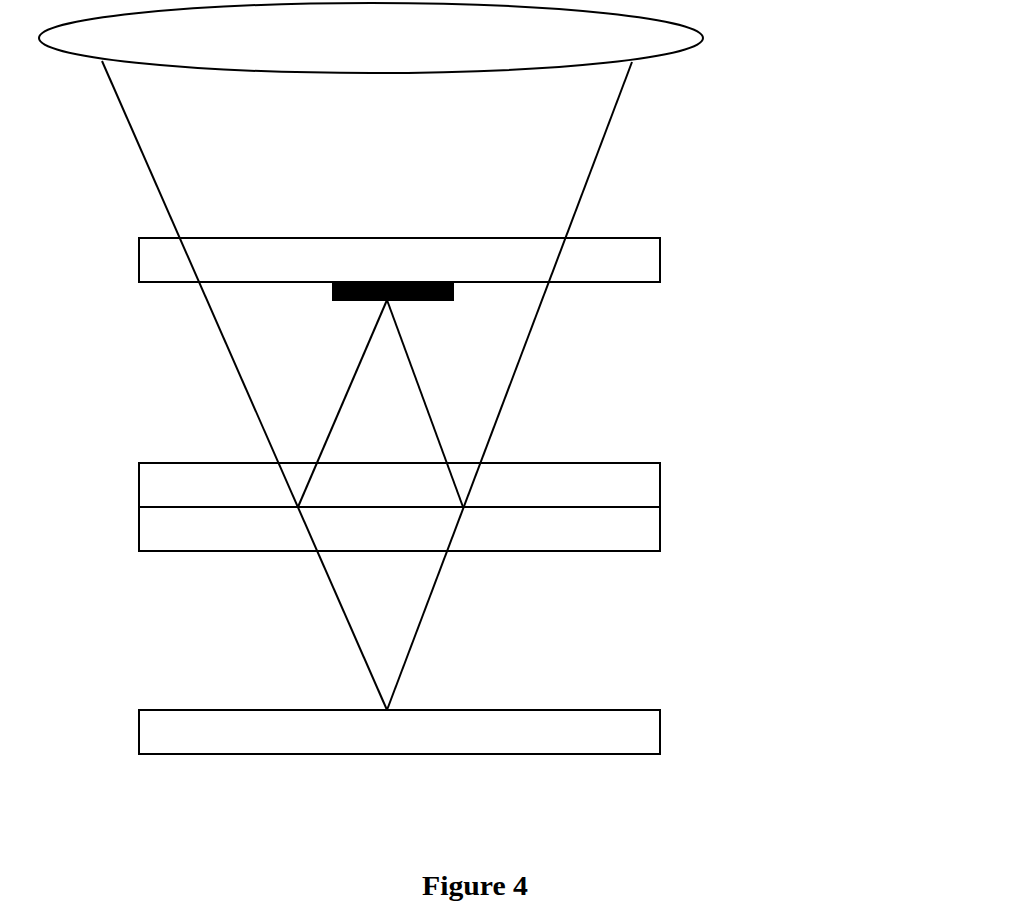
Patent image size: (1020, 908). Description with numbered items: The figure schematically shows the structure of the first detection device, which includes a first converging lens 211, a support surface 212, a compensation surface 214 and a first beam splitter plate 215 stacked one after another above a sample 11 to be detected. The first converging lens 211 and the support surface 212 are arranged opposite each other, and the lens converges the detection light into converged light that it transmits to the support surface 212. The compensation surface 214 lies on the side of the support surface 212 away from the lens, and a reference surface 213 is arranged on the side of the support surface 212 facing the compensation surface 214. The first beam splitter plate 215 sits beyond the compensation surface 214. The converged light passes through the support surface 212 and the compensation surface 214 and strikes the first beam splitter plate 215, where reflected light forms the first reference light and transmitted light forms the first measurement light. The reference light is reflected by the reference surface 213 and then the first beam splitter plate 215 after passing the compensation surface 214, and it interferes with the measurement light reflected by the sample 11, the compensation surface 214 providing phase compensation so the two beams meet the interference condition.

The first converging lens 211 is at (668, 36).
The support surface 212 is at (660, 259).
The reference surface 213 is at (440, 300).
The compensation surface 214 is at (660, 475).
The first beam splitter plate 215 is at (660, 533).
The sample to be detected 11 is at (660, 732).